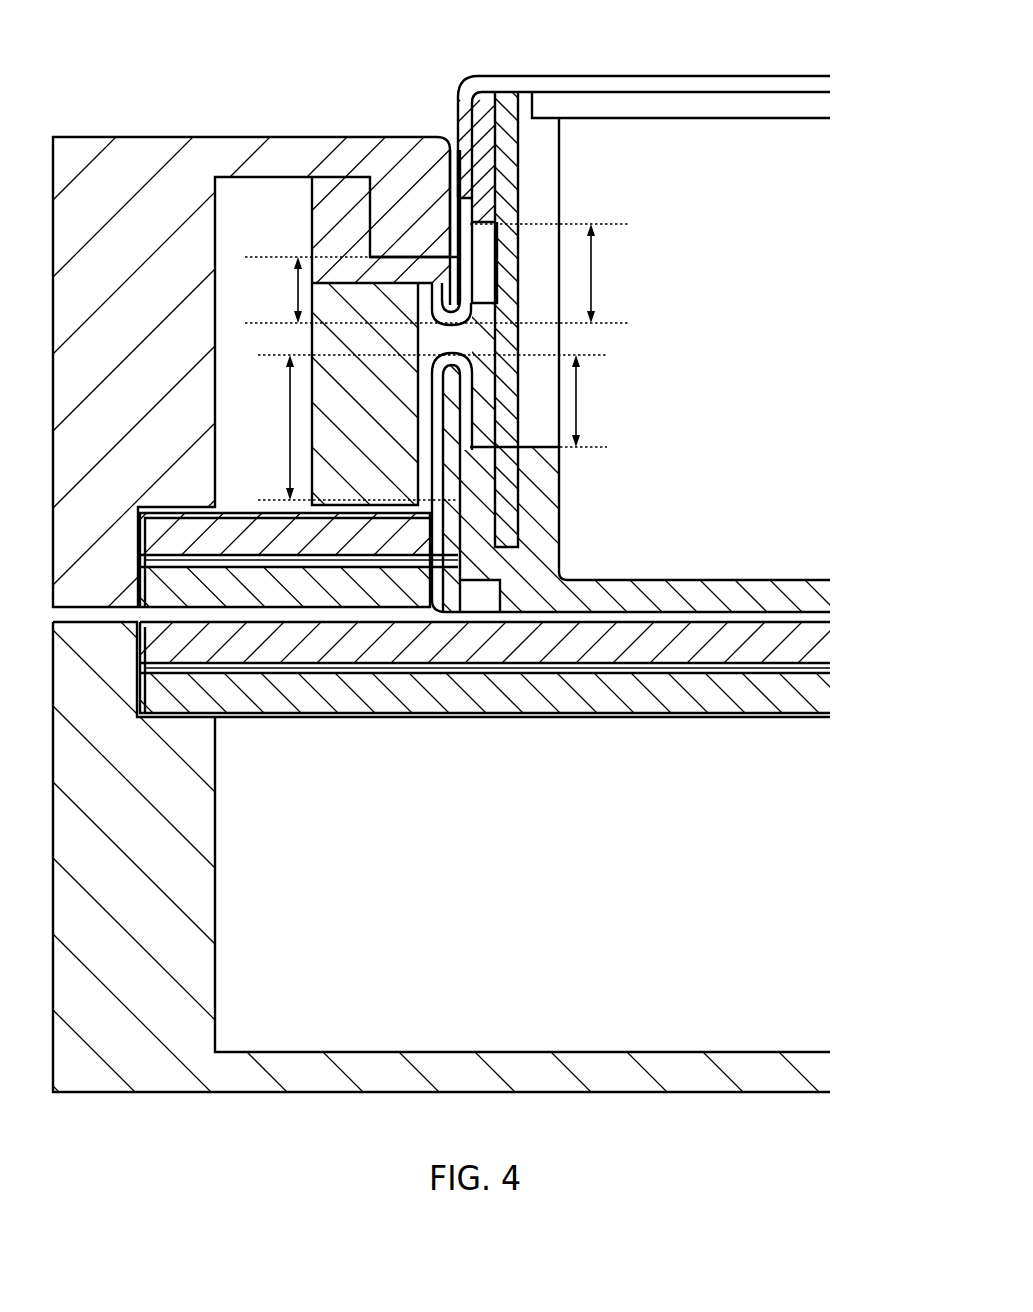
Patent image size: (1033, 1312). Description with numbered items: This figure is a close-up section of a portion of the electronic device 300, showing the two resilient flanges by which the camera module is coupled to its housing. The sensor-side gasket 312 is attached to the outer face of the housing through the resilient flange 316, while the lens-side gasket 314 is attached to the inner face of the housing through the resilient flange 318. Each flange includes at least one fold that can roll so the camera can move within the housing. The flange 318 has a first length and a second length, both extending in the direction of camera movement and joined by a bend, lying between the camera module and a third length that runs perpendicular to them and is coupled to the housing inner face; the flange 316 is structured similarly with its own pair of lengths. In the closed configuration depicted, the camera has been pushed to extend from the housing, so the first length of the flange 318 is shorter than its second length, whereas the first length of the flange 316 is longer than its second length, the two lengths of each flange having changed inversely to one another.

The electronic device 300 is at (516, 650).
The sensor-side gasket 312 is at (485, 110).
The lens-side gasket 314 is at (475, 563).
The resilient flange 316 is at (435, 285).
The resilient flange 318 is at (440, 465).